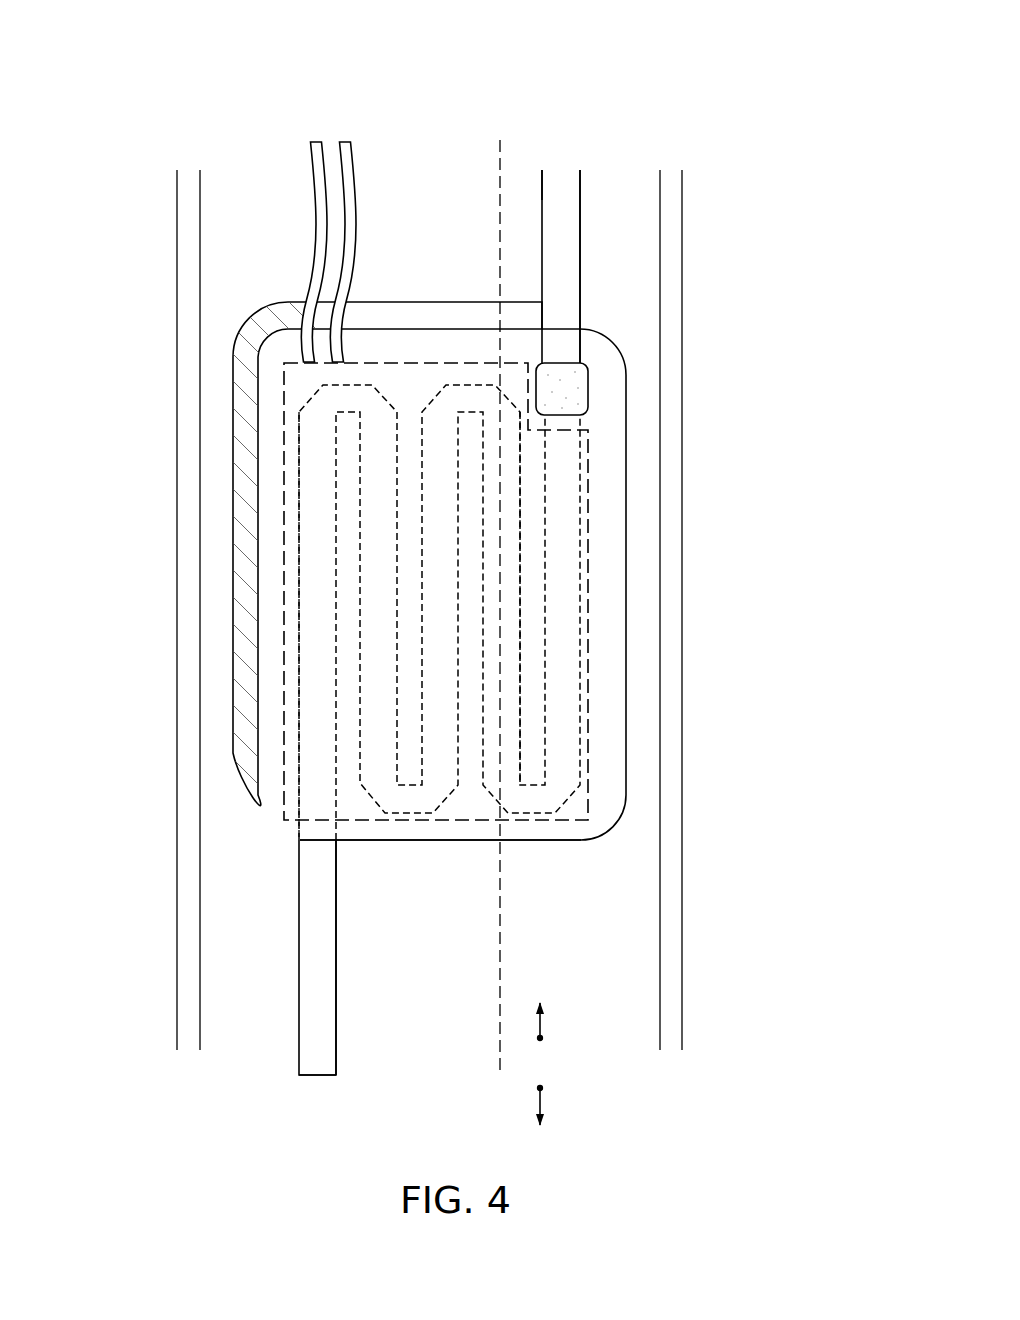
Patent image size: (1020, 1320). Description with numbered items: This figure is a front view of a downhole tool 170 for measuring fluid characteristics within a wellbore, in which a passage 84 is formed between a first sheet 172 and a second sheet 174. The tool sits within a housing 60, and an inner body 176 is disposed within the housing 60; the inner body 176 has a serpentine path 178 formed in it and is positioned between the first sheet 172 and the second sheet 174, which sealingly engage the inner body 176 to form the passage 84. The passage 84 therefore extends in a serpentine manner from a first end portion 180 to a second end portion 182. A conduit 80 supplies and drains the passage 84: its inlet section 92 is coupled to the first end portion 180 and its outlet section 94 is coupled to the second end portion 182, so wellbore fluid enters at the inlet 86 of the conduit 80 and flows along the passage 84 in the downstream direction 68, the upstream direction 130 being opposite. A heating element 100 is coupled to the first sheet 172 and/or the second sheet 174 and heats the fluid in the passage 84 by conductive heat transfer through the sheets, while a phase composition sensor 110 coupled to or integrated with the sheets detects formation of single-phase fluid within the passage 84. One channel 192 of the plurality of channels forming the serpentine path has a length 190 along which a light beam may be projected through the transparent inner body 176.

The downhole tool 170 is at (587, 80).
The housing 60 is at (190, 333).
The length 190 is at (498, 178).
The second sheet 174 is at (248, 318).
The path 178 is at (296, 660).
The first sheet 172 is at (628, 440).
The first end portion 180 is at (318, 843).
The second end portion 182 is at (560, 324).
The inner body 176 is at (434, 301).
The passage 84 is at (558, 668).
The channel 192 is at (522, 528).
The phase composition sensor 110 is at (588, 388).
The outlet section 94 is at (582, 233).
The inlet section 92 is at (338, 1022).
The conduit 80 is at (582, 185).
The inlet 86 is at (557, 170).
The heating element 100 is at (372, 360).
The downstream direction 68 is at (542, 1020).
The upstream direction 130 is at (542, 1100).